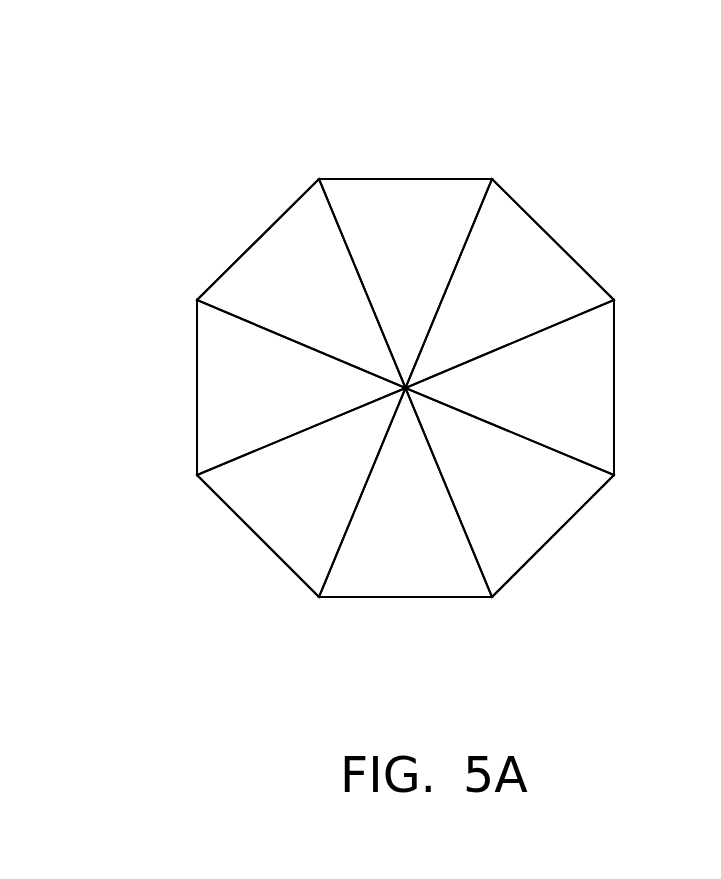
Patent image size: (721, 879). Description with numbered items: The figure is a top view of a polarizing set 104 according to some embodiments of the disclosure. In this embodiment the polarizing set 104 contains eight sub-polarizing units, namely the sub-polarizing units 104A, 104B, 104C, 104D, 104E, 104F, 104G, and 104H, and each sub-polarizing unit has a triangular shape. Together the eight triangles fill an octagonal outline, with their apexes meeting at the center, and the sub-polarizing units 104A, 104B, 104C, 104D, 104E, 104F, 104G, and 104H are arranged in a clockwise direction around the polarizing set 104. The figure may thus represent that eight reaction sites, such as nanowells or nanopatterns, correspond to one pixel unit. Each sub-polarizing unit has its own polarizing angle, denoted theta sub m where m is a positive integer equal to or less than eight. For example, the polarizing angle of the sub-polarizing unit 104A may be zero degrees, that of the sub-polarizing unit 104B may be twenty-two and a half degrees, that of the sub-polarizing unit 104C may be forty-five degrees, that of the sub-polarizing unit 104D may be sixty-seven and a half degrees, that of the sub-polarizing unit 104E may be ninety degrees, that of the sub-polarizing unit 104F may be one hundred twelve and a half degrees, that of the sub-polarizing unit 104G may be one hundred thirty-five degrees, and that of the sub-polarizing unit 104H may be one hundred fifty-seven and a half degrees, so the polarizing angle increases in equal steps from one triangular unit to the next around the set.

The polarizing set 104 is at (233, 73).
The sub-polarizing unit 104A is at (277, 262).
The sub-polarizing unit 104B is at (407, 208).
The sub-polarizing unit 104C is at (533, 262).
The sub-polarizing unit 104D is at (585, 390).
The sub-polarizing unit 104E is at (533, 517).
The sub-polarizing unit 104F is at (405, 568).
The sub-polarizing unit 104G is at (278, 515).
The sub-polarizing unit 104H is at (228, 390).